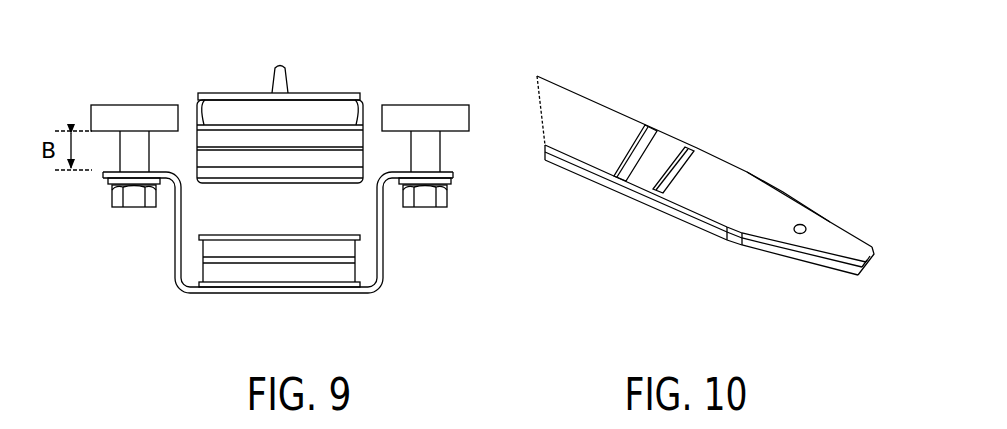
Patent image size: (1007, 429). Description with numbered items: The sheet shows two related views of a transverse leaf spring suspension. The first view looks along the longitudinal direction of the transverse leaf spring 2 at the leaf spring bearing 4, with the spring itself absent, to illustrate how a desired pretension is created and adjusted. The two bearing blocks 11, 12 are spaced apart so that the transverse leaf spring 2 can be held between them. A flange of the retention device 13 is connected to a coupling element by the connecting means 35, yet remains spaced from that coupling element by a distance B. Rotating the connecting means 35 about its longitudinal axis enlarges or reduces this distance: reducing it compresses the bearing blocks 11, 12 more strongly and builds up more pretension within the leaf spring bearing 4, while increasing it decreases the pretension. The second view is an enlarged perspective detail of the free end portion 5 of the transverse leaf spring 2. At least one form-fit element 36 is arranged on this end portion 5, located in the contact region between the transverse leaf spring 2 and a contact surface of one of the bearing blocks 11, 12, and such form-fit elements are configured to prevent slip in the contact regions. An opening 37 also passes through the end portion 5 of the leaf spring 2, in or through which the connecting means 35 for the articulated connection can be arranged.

In FIG. 10, the transverse leaf spring 2 is at (738, 197).
In FIG. 9, the leaf spring bearing 4 is at (164, 84).
In FIG. 10, the end portion 5 is at (791, 191).
In FIG. 9, the bearing block 11 is at (240, 112).
In FIG. 9, the bearing block 12 is at (228, 277).
In FIG. 9, the retention device 13 is at (382, 288).
In FIG. 9, the connecting means 35 is at (132, 197).
In FIG. 10, the form-fit element 36 is at (650, 131).
In FIG. 10, the opening 37 is at (805, 224).